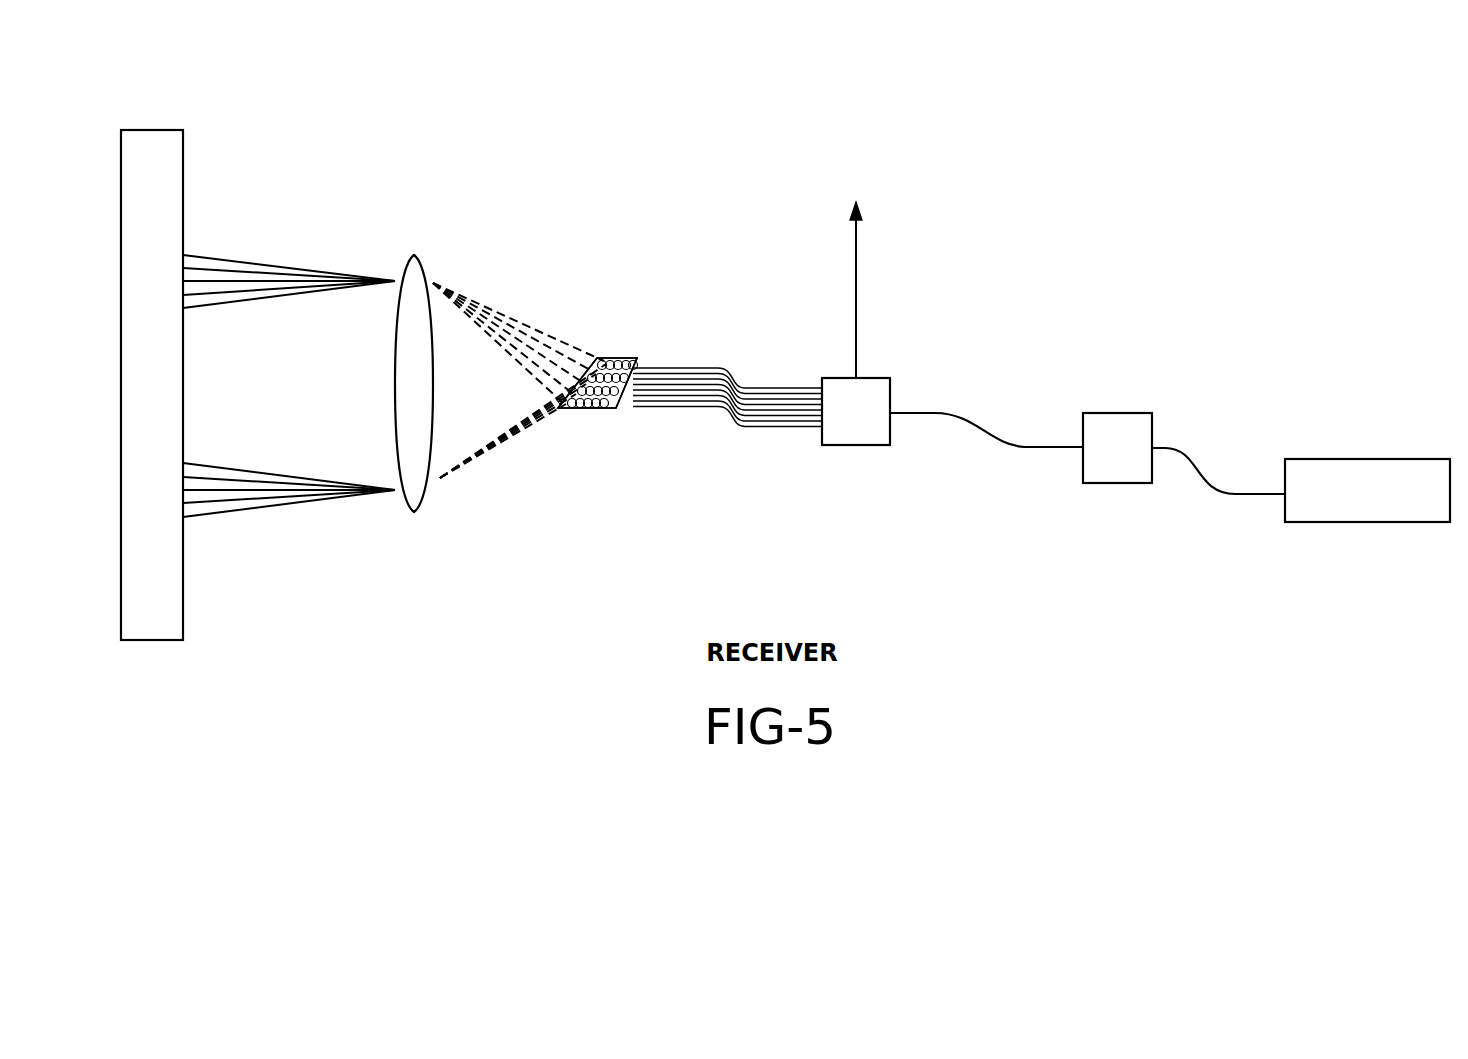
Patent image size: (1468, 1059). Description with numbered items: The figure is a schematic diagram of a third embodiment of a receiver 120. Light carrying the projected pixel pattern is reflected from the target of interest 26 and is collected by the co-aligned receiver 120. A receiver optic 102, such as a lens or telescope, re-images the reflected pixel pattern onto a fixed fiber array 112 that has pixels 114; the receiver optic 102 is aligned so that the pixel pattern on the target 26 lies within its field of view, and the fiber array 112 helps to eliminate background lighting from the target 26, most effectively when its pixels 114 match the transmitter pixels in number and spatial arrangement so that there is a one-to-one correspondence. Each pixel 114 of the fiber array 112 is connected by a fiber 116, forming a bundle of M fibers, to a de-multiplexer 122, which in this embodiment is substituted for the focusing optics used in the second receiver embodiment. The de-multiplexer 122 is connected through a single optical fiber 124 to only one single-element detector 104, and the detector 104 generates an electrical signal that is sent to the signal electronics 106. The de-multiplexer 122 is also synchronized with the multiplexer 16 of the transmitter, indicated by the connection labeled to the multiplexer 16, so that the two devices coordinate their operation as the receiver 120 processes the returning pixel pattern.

The target of interest 26 is at (168, 401).
The receiver optic 102 is at (442, 259).
The fiber array 112 is at (628, 339).
The pixels 114 is at (598, 357).
The fiber 116 is at (707, 410).
The de-multiplexer 122 is at (832, 429).
The multiplexer 16 is at (858, 266).
The optical fiber 124 is at (1020, 444).
The single element detector 104 is at (1092, 463).
The signal electronics 106 is at (1341, 509).
The receiver 120 is at (1113, 180).